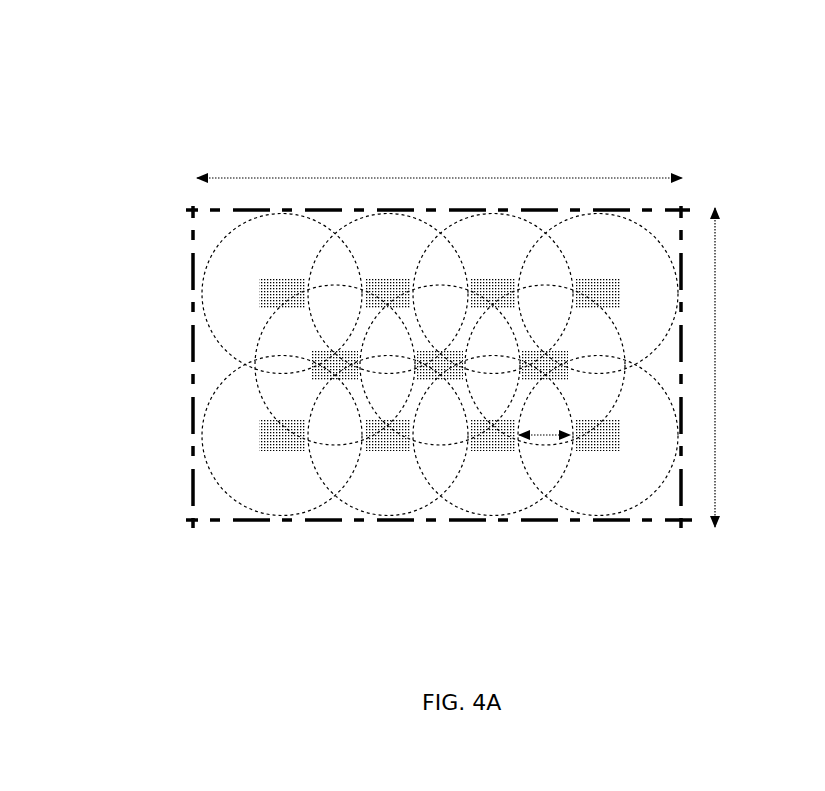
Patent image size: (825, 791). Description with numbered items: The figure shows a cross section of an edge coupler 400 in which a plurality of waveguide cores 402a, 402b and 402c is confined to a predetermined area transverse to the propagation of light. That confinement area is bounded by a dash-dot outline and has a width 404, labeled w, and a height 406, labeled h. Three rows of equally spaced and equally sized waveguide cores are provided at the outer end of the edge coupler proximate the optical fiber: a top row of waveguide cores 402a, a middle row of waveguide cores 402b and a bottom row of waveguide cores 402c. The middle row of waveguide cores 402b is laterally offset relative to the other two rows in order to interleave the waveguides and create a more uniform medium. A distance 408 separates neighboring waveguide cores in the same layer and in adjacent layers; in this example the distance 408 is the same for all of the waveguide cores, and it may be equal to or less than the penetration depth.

The edge coupler 400 is at (592, 152).
The waveguide cores 402a is at (597, 272).
The waveguide cores 402b is at (523, 373).
The waveguide cores 402c is at (588, 459).
The width 404 is at (439, 164).
The height 406 is at (759, 367).
The distance 408 is at (542, 452).